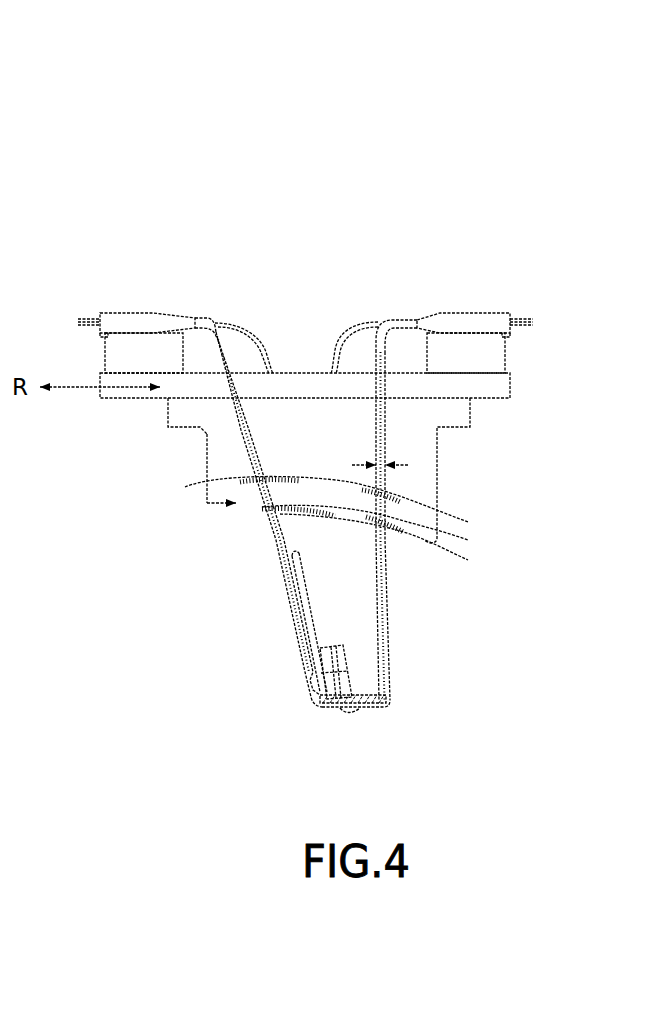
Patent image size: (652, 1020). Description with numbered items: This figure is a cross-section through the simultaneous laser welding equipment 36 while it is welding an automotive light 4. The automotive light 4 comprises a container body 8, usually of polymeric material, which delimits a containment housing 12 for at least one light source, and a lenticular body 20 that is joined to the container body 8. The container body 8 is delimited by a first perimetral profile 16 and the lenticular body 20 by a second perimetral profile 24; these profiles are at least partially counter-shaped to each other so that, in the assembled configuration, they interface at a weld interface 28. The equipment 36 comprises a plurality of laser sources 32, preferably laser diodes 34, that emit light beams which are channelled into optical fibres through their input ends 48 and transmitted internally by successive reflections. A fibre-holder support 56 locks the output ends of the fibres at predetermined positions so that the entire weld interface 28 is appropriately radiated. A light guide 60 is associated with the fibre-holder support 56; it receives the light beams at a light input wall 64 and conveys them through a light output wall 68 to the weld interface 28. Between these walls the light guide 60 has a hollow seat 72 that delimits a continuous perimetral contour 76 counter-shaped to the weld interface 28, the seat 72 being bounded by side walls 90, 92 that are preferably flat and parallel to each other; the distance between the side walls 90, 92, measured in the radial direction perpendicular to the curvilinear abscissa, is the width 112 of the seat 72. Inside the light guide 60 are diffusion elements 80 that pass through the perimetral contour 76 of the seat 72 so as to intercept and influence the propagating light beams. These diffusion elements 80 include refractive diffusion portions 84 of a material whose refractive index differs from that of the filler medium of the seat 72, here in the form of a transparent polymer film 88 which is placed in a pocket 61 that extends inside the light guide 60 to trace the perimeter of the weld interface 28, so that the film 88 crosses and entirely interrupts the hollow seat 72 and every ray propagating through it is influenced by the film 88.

The automotive light 4 is at (282, 677).
The container body 8 is at (392, 672).
The containment housing 12 is at (350, 608).
The first perimetral profile 16 is at (268, 540).
The lenticular body 20 is at (437, 543).
The second perimetral profile 24 is at (390, 535).
The weld interface 28 is at (268, 517).
The laser sources 32 is at (504, 288).
The laser diodes 34 is at (487, 318).
The simultaneous laser welding equipment 36 is at (228, 178).
The input end 48 is at (205, 318).
The fibre-holder support 56 is at (493, 390).
The light guide 60 is at (420, 450).
The pocket 61 is at (200, 488).
The light input wall 64 is at (193, 400).
The light output wall 68 is at (206, 505).
The hollow seat 72 is at (380, 311).
The perimetral contour 76 is at (375, 437).
The diffusion elements 80 is at (320, 378).
The refractive diffusion portions 84 is at (320, 378).
The film 88 is at (365, 482).
The side wall 90 is at (262, 338).
The side wall 92 is at (240, 412).
The width 112 is at (388, 490).